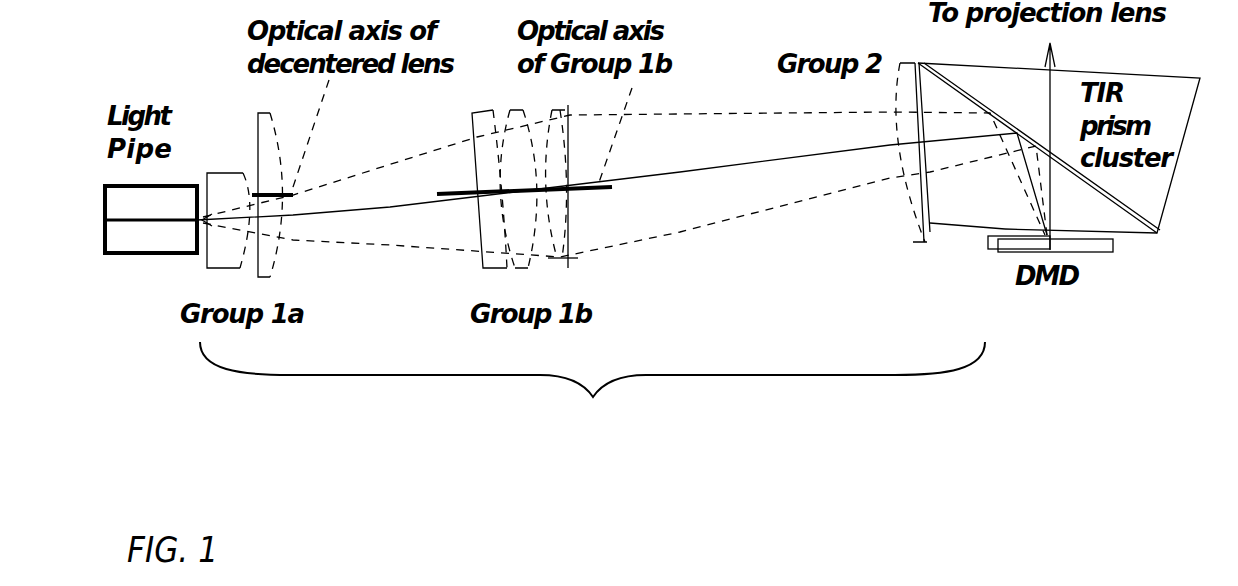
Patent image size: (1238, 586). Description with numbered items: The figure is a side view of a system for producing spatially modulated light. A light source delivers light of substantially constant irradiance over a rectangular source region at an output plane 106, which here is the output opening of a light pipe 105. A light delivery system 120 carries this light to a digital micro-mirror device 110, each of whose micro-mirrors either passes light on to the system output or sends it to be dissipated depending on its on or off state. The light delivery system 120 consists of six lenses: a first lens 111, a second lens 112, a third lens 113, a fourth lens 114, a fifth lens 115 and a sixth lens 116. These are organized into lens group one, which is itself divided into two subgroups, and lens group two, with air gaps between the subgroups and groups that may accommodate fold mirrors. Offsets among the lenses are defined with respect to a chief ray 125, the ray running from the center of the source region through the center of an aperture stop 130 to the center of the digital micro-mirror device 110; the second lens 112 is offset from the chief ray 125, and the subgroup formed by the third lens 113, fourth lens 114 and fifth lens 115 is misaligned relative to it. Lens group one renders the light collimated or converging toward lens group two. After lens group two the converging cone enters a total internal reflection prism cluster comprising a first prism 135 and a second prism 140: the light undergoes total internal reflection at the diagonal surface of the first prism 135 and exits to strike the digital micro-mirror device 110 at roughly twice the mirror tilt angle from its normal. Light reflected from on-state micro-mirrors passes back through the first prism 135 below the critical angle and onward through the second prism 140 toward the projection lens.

The light pipe 105 is at (167, 248).
The output plane 106 is at (204, 187).
The digital micro-mirror device 110 is at (1098, 250).
The first lens 111 is at (242, 172).
The second lens 112 is at (275, 255).
The third lens 113 is at (475, 128).
The fourth lens 114 is at (517, 110).
The fifth lens 115 is at (568, 233).
The sixth lens 116 is at (918, 247).
The light delivery system 120 is at (592, 388).
The chief ray 125 is at (748, 165).
The aperture stop 130 is at (573, 267).
The first prism 135 is at (973, 228).
The second prism 140 is at (1072, 72).